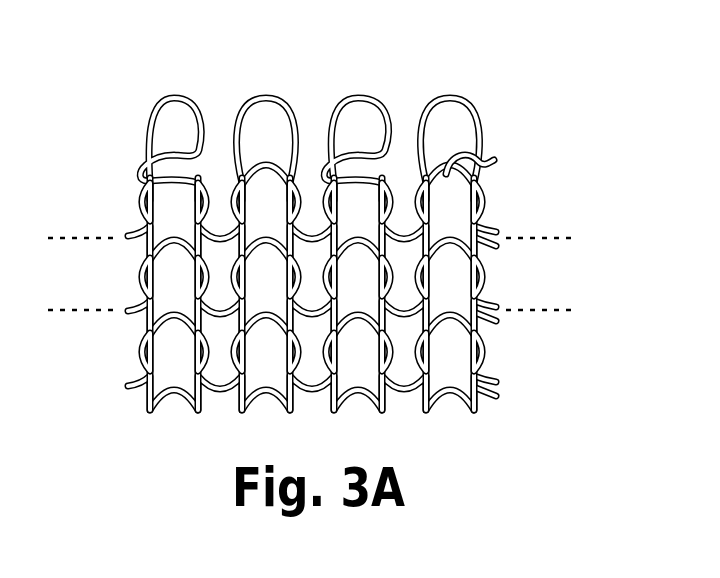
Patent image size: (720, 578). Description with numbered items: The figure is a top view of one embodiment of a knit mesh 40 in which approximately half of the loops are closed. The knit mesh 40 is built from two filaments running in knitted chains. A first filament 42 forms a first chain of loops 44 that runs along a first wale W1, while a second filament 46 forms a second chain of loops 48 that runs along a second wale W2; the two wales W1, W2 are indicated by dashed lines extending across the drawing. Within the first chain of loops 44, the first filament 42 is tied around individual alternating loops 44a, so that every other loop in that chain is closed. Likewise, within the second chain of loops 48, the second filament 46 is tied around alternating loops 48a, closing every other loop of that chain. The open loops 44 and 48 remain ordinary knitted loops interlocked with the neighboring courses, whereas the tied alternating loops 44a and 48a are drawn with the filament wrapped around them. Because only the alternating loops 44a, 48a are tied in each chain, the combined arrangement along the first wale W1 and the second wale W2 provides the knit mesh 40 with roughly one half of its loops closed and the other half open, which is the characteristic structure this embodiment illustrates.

The knit mesh 40 is at (481, 71).
The first filament 42 is at (146, 233).
The first chain of loops 44 is at (296, 118).
The alternating loops 44a is at (147, 136).
The second filament 46 is at (134, 322).
The second chain of loops 48 is at (142, 245).
The alternating loops 48a is at (496, 163).
The first wale W1 is at (331, 243).
The second wale W2 is at (331, 315).